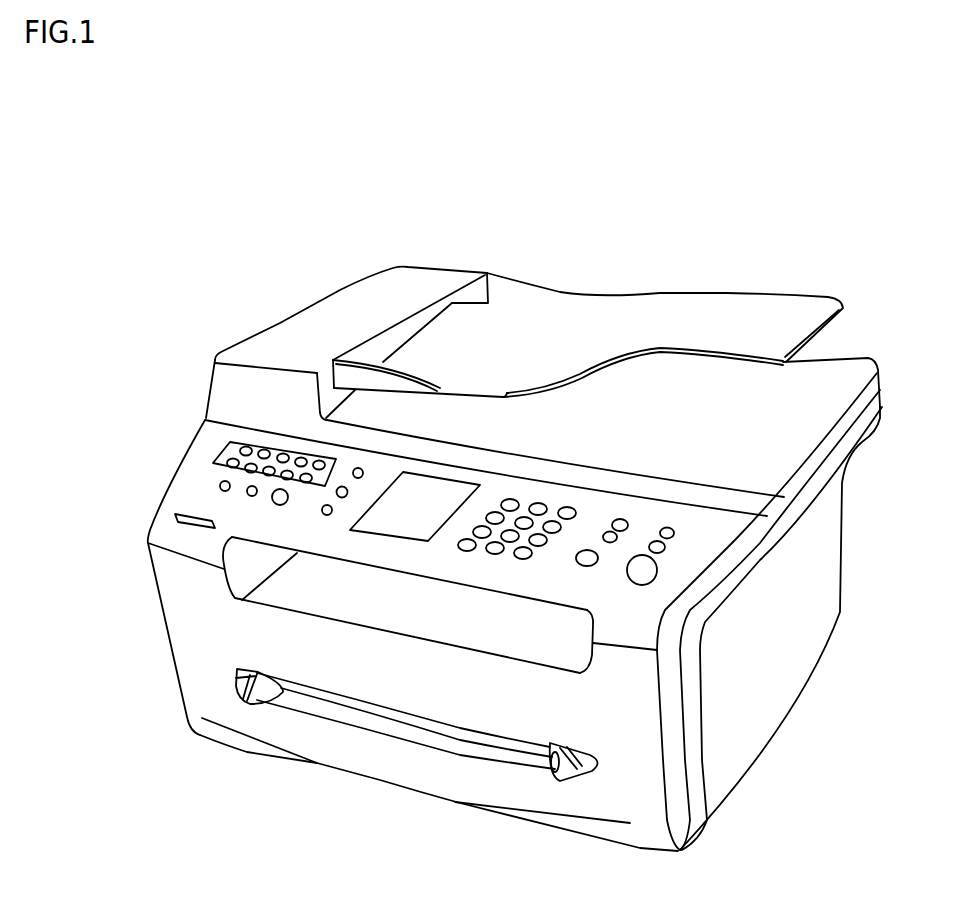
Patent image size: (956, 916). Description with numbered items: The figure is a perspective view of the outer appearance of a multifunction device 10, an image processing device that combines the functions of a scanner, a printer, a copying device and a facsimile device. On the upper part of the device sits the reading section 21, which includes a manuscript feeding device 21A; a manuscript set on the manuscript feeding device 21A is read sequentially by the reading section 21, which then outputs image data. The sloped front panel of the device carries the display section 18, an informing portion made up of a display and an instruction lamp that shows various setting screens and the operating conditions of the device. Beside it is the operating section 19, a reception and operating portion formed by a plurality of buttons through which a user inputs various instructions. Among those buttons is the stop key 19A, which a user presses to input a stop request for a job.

The multifunction device 10 is at (659, 178).
The reading section 21 is at (280, 273).
The manuscript feeding device 21A is at (410, 277).
The display section 18 is at (400, 530).
The operating section 19 is at (463, 580).
The stop key 19A is at (583, 553).